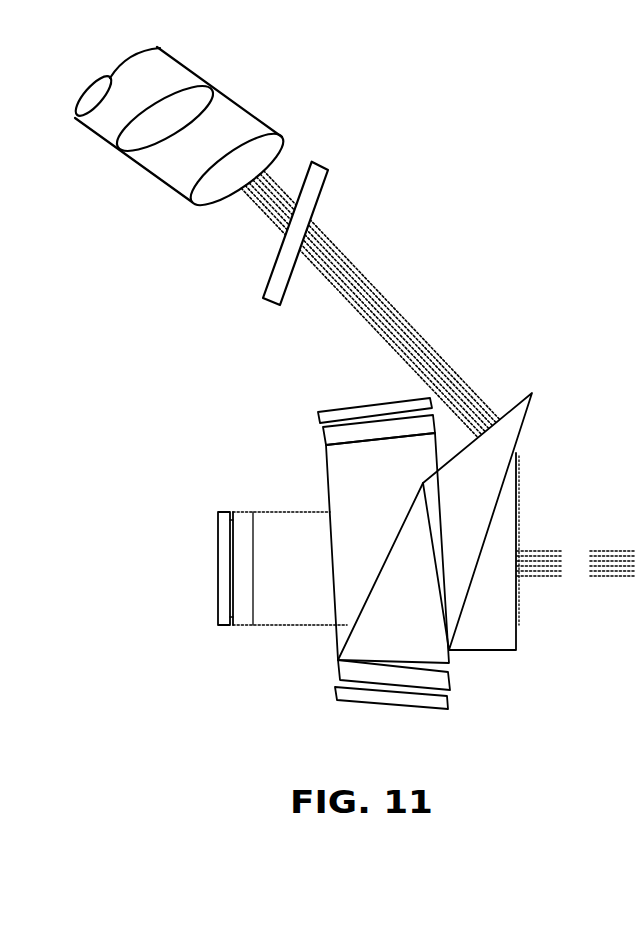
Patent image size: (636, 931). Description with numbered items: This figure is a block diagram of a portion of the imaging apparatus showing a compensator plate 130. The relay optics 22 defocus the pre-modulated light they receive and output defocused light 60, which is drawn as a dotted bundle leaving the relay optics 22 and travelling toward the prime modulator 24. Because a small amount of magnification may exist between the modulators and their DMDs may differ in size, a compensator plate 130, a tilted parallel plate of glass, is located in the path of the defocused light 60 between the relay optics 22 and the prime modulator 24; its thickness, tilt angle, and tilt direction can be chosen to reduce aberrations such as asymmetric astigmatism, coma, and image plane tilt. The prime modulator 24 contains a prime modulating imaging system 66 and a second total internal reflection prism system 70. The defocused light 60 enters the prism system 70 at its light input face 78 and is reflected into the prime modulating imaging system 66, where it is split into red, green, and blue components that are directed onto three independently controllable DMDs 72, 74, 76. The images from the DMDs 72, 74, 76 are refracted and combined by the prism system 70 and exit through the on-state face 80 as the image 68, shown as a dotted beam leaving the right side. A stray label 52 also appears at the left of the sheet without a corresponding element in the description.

The relay optics 22 is at (65, 107).
The compensator plate 130 is at (317, 163).
The defocused light 60 is at (370, 304).
The prime modulator 24 is at (395, 545).
The DMD 72 is at (240, 512).
The DMD 76 is at (323, 437).
The prime modulating imaging system 66 is at (315, 500).
The DMD 74 is at (457, 683).
The second total internal reflection prism system 70 is at (516, 506).
The light input face 78 is at (531, 394).
The on-state face 80 is at (517, 627).
The image 68 is at (576, 565).
The prism 52 is at (31, 529).